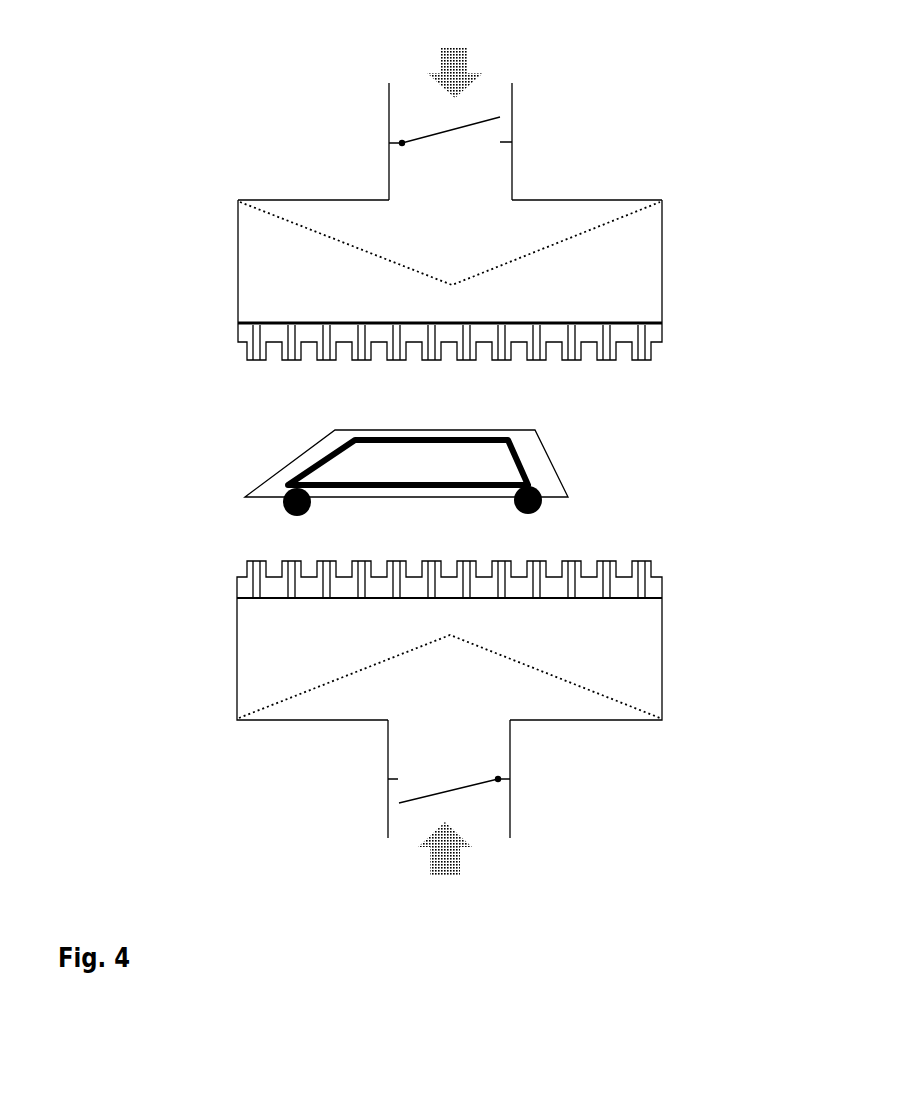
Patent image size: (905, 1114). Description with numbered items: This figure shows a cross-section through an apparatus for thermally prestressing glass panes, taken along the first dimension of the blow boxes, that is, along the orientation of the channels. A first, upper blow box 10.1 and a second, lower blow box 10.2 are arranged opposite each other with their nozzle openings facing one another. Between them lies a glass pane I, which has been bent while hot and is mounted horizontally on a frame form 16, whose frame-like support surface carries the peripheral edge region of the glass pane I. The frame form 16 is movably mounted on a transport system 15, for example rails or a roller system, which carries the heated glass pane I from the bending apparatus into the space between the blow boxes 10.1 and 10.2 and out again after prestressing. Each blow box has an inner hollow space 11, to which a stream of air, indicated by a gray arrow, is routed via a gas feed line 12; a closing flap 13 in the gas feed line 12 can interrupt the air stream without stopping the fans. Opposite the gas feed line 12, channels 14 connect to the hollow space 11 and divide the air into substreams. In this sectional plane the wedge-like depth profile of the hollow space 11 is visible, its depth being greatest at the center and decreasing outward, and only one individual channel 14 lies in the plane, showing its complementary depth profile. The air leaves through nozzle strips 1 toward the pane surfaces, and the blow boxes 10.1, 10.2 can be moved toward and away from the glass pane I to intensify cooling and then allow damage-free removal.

The nozzle strip 1 is at (242, 336).
The hollow space 11 is at (400, 250).
The gas feed line 12 is at (410, 98).
The closing flap 13 is at (423, 135).
The channel 14 is at (260, 263).
The transport system 15 is at (285, 508).
The frame form 16 is at (312, 470).
The glass pane I is at (270, 477).
The upper blow box 10.1 is at (487, 198).
The lower blow box 10.2 is at (725, 553).